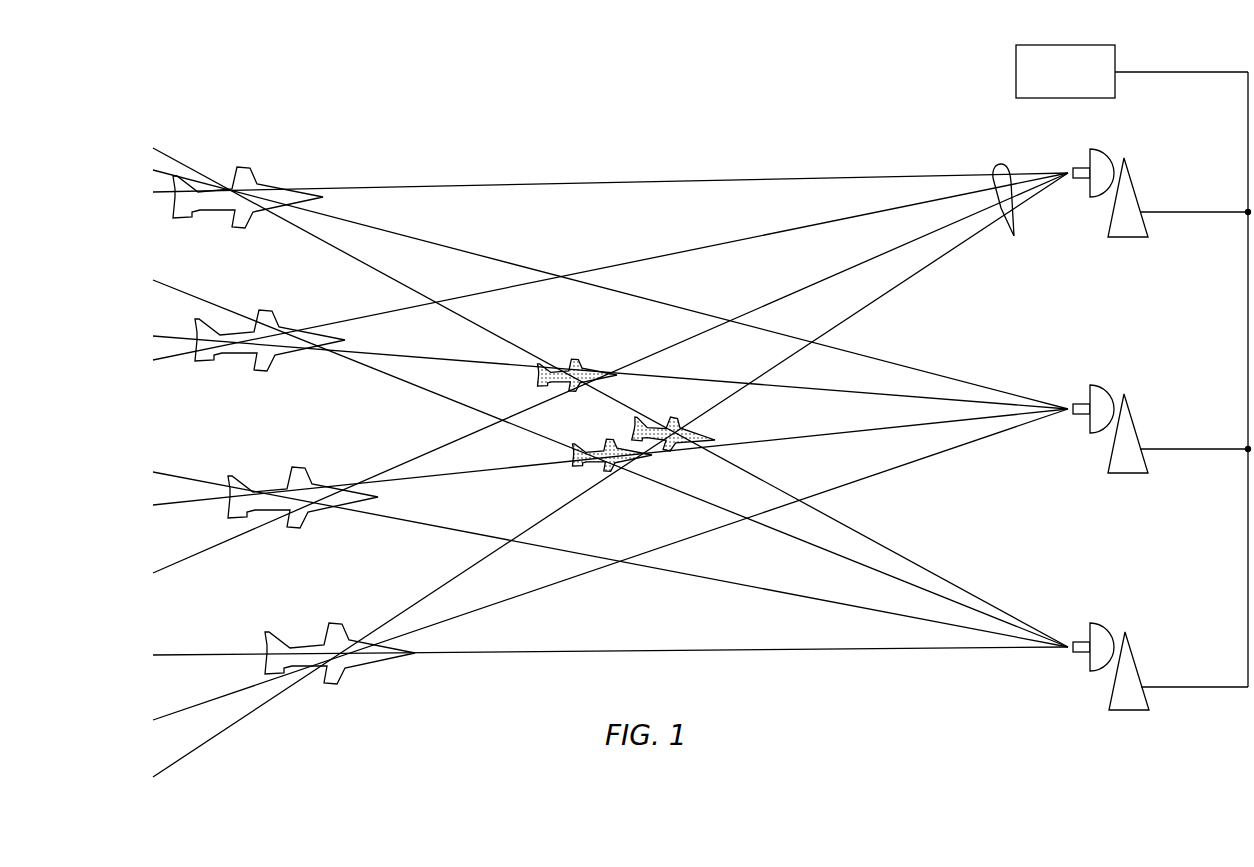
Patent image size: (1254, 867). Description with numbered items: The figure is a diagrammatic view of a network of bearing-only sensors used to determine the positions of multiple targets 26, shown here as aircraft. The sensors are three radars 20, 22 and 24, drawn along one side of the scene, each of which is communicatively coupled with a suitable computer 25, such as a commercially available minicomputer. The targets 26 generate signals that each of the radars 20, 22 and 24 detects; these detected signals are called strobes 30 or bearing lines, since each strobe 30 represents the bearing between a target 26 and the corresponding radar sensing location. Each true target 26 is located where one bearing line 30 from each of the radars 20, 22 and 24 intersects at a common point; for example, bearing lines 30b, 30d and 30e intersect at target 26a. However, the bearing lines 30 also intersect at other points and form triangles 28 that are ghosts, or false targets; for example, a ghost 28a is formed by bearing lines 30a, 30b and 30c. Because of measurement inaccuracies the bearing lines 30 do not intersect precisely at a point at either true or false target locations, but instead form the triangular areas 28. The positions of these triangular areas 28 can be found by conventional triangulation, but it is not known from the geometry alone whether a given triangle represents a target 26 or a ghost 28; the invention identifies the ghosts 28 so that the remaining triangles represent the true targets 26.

The radar 20 is at (1133, 237).
The radar 22 is at (1133, 473).
The radar 24 is at (1134, 710).
The computer 25 is at (1016, 72).
The target 26 is at (252, 168).
The target 26a is at (305, 468).
The triangle (ghost) 28 is at (690, 436).
The ghost 28a is at (588, 362).
The strobe (bearing line) 30 is at (1014, 236).
The bearing line 30a is at (840, 390).
The bearing line 30b is at (818, 280).
The bearing line 30c is at (966, 585).
The bearing line 30d is at (838, 430).
The bearing line 30e is at (781, 591).